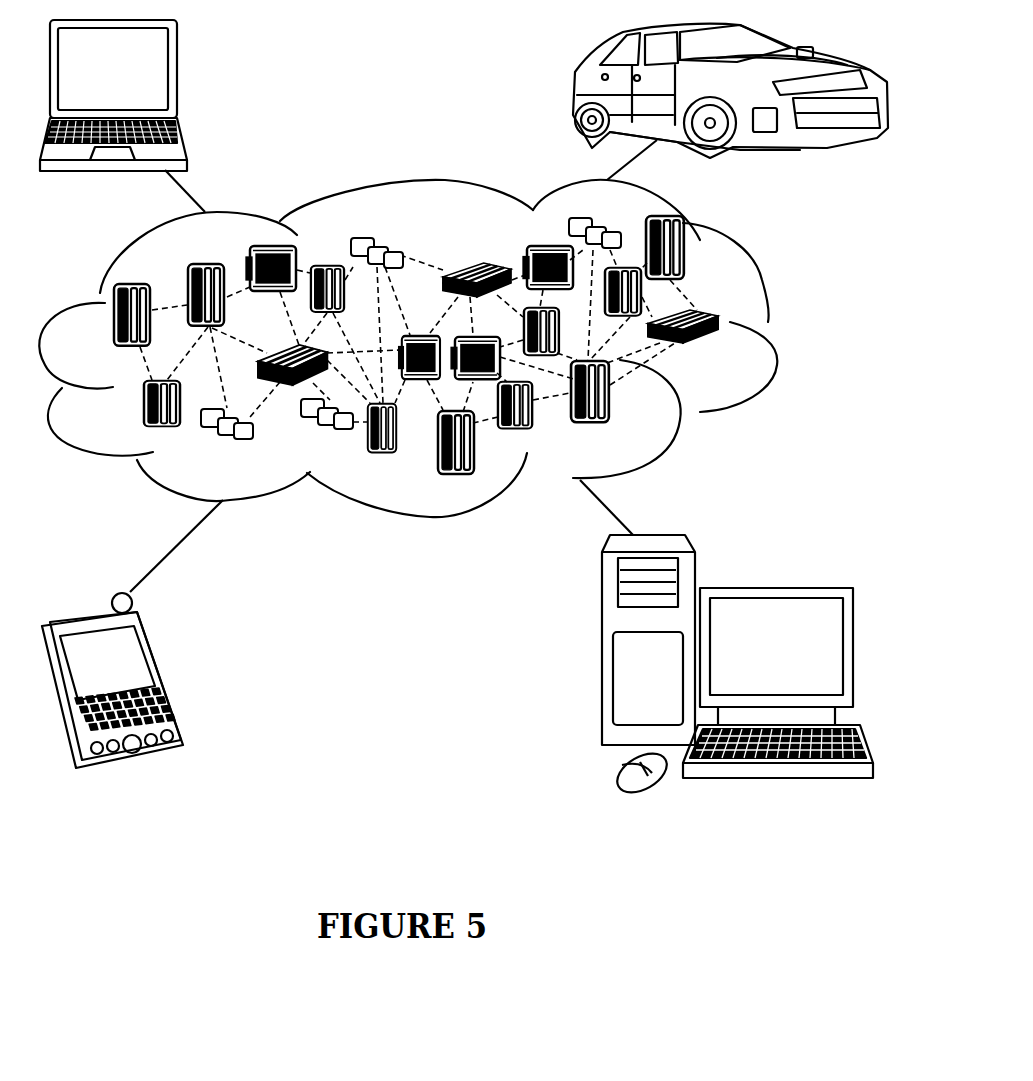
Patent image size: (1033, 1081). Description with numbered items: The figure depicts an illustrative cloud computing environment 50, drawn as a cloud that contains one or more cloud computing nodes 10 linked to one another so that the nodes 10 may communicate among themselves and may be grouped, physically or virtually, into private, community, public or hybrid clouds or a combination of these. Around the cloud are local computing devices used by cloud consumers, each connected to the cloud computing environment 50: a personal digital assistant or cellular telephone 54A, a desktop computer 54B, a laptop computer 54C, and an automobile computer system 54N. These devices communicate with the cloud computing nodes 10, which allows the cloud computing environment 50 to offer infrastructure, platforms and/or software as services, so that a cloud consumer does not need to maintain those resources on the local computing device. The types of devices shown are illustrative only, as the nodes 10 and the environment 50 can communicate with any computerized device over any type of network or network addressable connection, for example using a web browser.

The personal digital assistant or cellular telephone 54A is at (167, 670).
The desktop computer 54B is at (775, 587).
The laptop computer 54C is at (177, 77).
The automobile computer system 54N is at (572, 90).
The cloud computing environment 50 is at (436, 348).
The cloud computing node 10 is at (727, 352).